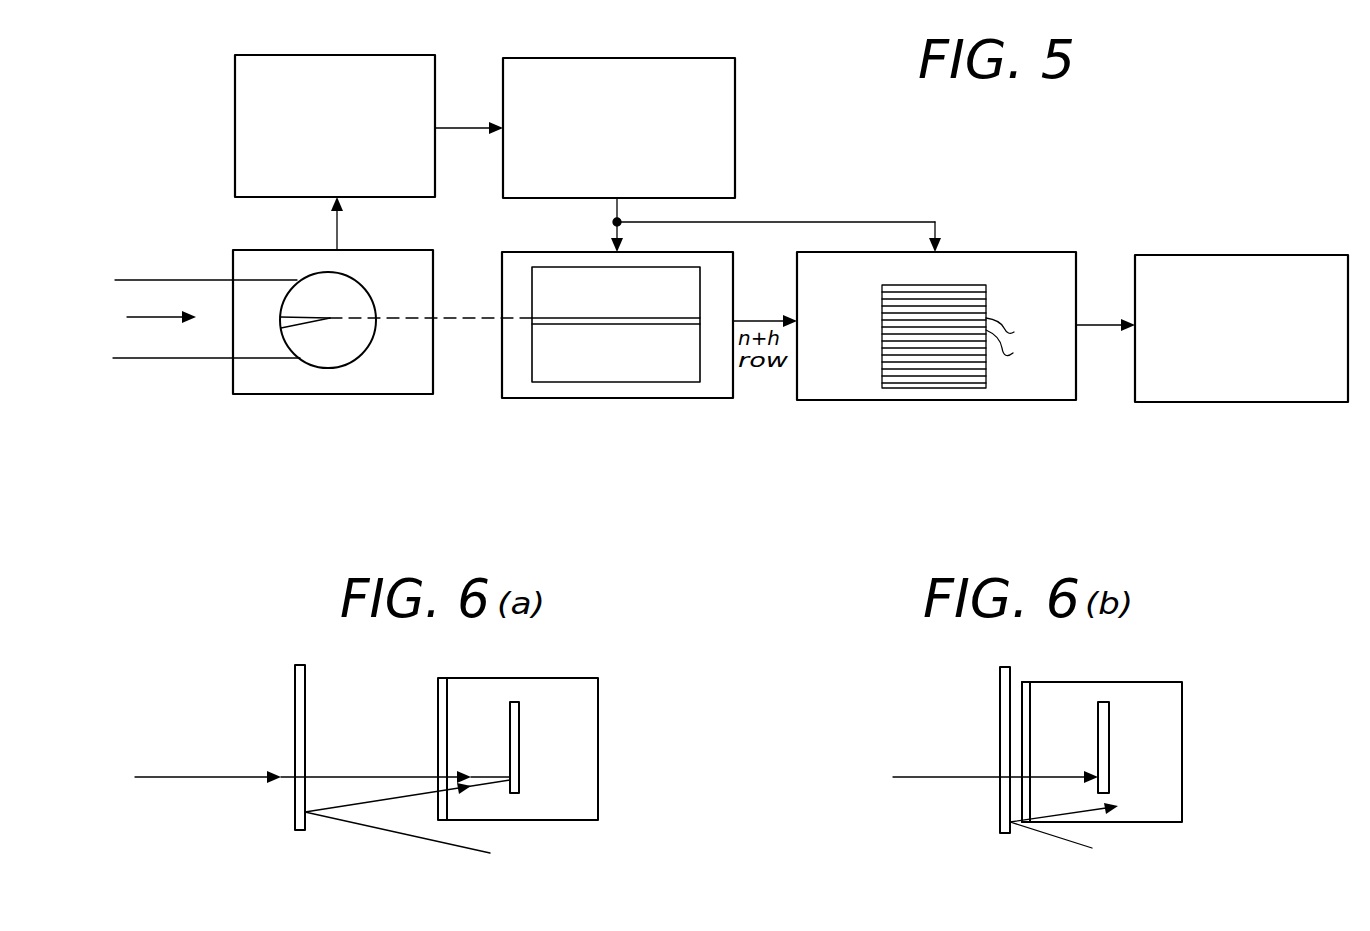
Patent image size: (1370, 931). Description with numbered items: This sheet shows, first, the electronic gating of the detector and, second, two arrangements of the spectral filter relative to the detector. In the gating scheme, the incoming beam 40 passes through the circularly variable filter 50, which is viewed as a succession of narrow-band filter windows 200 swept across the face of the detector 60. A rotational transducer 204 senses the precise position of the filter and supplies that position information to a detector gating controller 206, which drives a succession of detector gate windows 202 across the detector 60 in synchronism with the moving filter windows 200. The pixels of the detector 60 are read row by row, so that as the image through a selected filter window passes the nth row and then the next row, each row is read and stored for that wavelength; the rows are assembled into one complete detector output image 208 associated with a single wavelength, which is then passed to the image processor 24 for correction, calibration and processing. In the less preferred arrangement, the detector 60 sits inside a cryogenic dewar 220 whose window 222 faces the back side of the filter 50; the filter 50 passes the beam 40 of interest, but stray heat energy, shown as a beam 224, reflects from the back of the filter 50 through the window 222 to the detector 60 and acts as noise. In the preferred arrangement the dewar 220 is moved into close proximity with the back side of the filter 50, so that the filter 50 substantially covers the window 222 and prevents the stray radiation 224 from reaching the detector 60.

In FIG. 5, the image processor 24 is at (1250, 255).
In FIG. 5, the beam 40 is at (146, 318).
In FIG. 6a, the beam 40 is at (180, 776).
In FIG. 6b, the beam 40 is at (914, 779).
In FIG. 5, the circularly variable filter 50 is at (305, 368).
In FIG. 6a, the circularly variable filter 50 is at (295, 688).
In FIG. 6b, the circularly variable filter 50 is at (1000, 683).
In FIG. 5, the detector 60 is at (548, 382).
In FIG. 6a, the detector 60 is at (519, 782).
In FIG. 6b, the detector 60 is at (1109, 712).
In FIG. 5, the filter window 200 is at (322, 318).
In FIG. 5, the detector gate window 202 is at (618, 319).
In FIG. 5, the rotational transducer 204 is at (235, 130).
In FIG. 5, the detector gating controller 206 is at (735, 91).
In FIG. 5, the detector output image 208 is at (918, 388).
In FIG. 6a, the dewar 220 is at (598, 732).
In FIG. 6b, the dewar 220 is at (1182, 725).
In FIG. 6a, the window 222 is at (438, 691).
In FIG. 6b, the window 222 is at (1030, 692).
In FIG. 6a, the beam 224 is at (360, 825).
In FIG. 6b, the beam 224 is at (1048, 836).